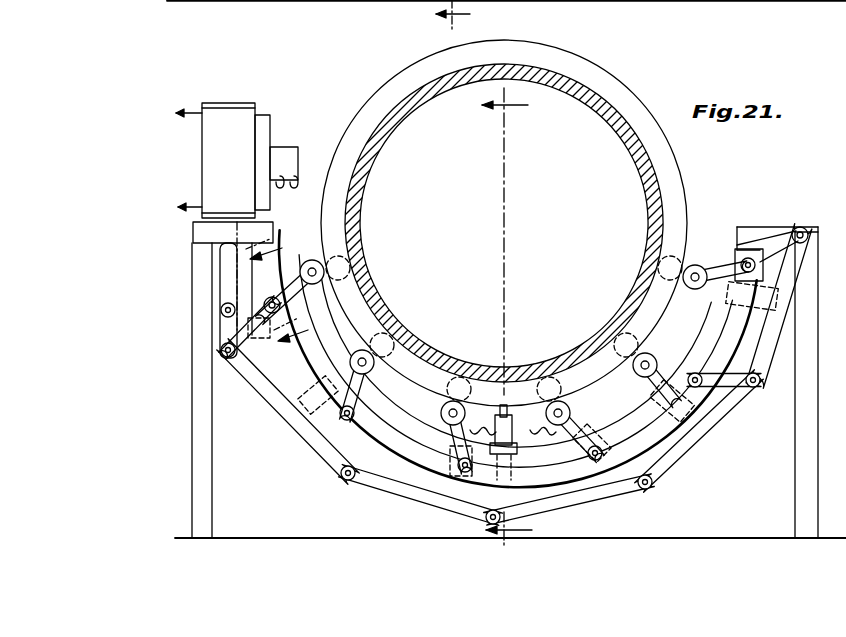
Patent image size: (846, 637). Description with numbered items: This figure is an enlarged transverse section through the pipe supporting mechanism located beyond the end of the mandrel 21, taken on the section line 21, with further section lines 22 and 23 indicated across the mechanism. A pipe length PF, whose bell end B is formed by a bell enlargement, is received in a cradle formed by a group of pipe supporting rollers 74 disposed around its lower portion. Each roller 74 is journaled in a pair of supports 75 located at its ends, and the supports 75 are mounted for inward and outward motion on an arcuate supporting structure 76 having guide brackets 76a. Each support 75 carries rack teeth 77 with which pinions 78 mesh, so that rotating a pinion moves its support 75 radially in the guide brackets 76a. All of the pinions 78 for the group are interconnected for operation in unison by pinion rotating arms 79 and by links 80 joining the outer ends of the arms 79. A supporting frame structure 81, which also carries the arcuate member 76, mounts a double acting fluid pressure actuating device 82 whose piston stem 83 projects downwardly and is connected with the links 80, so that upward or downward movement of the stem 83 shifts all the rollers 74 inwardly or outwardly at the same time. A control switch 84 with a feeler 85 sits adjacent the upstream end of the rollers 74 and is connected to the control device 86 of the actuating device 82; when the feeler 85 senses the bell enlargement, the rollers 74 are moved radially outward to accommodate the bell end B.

The bell end B is at (596, 62).
The pipe length PF is at (612, 98).
The mandrel 21 is at (467, 16).
The section line 22 is at (521, 321).
The section line 23 is at (288, 289).
The pipe supporting rollers 74 is at (312, 260).
The supports 75 is at (296, 406).
The arcuate supporting structure 76 is at (286, 362).
The guide brackets 76a is at (700, 425).
The rack teeth 77 is at (352, 398).
The pinions 78 is at (281, 305).
The pinion rotating arms 79 is at (226, 327).
The links 80 is at (308, 440).
The supporting frame structure 81 is at (192, 258).
The double acting fluid pressure actuating device 82 is at (200, 142).
The piston stem 83 is at (228, 262).
The control switch 84 is at (515, 450).
The feeler 85 is at (506, 414).
The control device 86 is at (286, 146).